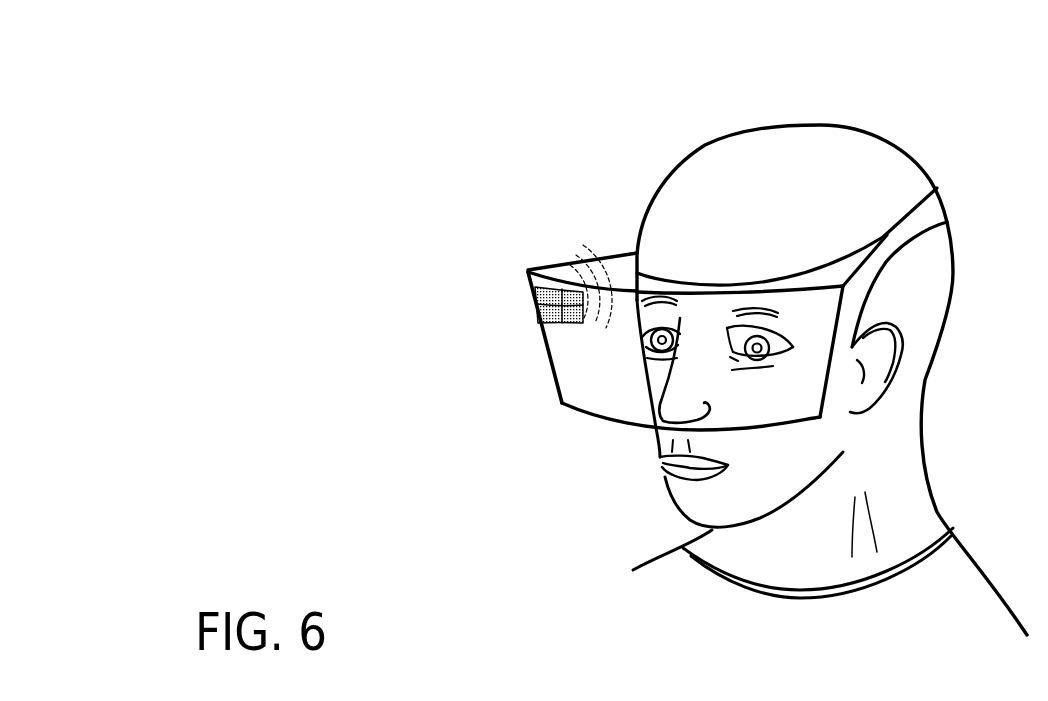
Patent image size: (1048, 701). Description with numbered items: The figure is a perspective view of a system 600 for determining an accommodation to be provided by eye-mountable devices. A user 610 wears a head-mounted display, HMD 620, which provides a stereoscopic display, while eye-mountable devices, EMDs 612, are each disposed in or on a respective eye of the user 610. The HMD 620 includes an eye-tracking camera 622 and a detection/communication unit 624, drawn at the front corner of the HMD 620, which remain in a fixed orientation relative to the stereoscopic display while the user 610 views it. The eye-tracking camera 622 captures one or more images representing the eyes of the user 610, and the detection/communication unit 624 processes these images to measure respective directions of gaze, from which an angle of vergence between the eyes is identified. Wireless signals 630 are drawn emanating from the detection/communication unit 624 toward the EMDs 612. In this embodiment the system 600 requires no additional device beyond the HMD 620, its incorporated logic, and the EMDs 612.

The system 600 is at (358, 90).
The user 610 is at (932, 627).
The eye-mountable devices (EMDs) 612 is at (629, 352).
The head-mounted display (HMD) 620 is at (553, 393).
The eye-tracking camera 622 is at (542, 310).
The detection/communication unit 624 is at (519, 289).
The wireless signal 630 is at (586, 244).